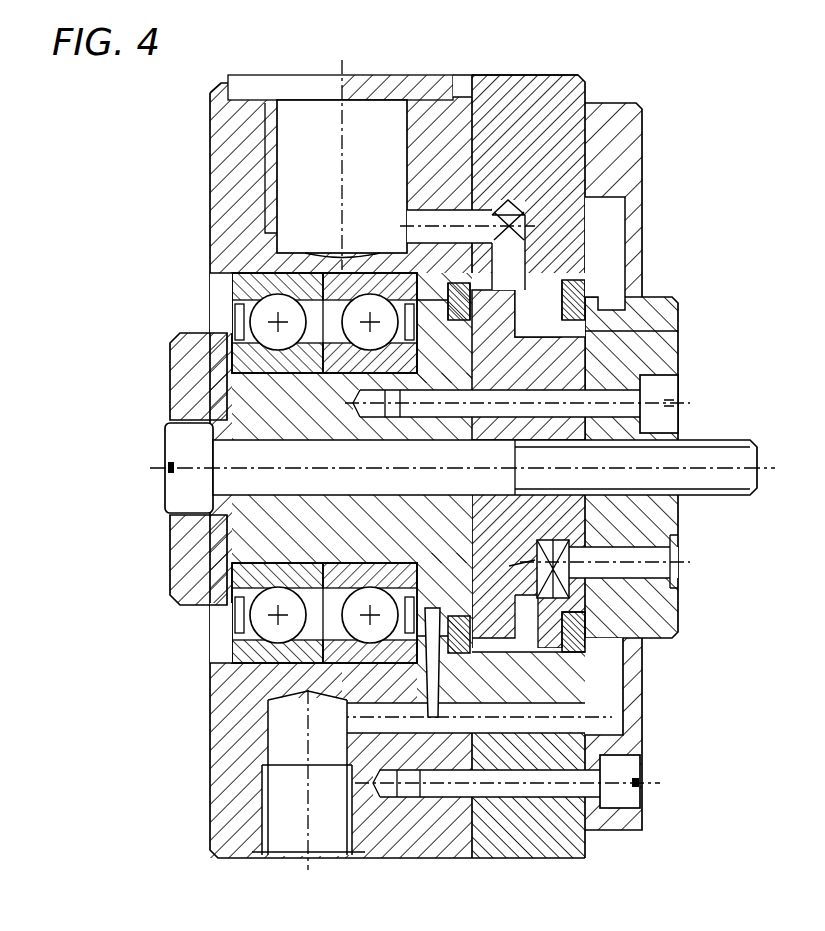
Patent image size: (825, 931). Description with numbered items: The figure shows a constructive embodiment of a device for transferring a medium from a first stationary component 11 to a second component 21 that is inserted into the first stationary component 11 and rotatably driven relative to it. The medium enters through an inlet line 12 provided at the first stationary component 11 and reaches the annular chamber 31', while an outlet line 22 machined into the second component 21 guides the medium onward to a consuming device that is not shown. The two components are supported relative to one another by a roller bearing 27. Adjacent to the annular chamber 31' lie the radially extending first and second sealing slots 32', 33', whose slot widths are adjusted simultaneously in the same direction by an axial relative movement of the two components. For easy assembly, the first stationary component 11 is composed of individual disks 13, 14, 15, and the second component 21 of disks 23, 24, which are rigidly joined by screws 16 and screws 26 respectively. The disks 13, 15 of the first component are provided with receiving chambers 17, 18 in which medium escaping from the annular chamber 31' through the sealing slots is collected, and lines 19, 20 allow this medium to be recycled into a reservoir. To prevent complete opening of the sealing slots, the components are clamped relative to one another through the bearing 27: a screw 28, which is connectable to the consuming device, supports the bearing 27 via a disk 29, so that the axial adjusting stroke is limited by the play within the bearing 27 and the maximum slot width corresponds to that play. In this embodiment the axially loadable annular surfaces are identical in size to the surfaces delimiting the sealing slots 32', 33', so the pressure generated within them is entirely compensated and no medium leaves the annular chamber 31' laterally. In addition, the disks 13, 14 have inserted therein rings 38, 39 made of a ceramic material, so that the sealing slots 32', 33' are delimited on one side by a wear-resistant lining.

The first stationary component 11 is at (250, 83).
The inlet line 12 is at (303, 120).
The disk 13 is at (445, 115).
The disk 14 is at (490, 108).
The disk 15 is at (615, 130).
The screw 16 is at (615, 796).
The receiving chamber 17 is at (438, 735).
The receiving chamber 18 is at (610, 222).
The line 19 is at (640, 740).
The line 20 is at (295, 822).
The second component 21 is at (688, 521).
The outlet line 22 is at (648, 572).
The disk 23 is at (220, 533).
The disk 24 is at (585, 602).
The screw 26 is at (660, 392).
The roller bearing 27 is at (232, 285).
The screw 28 is at (178, 445).
The disk 29 is at (193, 383).
The annular chamber 31' is at (476, 165).
The first sealing slot 32' is at (410, 249).
The second sealing slot 33' is at (636, 251).
The ring 38 is at (500, 322).
The ring 39 is at (586, 312).